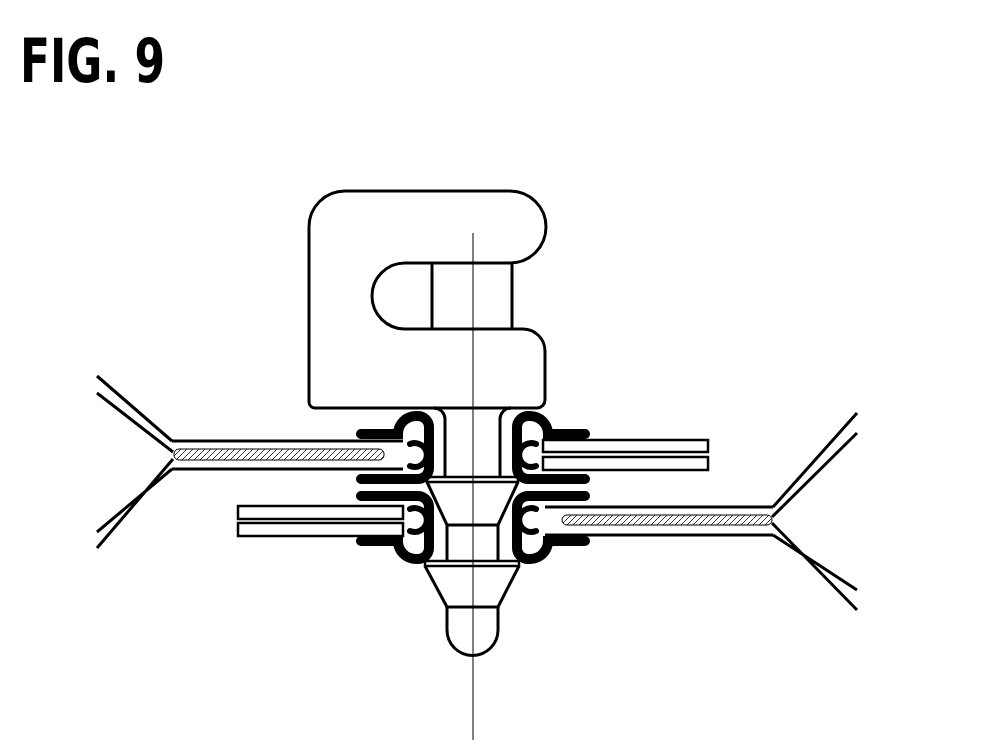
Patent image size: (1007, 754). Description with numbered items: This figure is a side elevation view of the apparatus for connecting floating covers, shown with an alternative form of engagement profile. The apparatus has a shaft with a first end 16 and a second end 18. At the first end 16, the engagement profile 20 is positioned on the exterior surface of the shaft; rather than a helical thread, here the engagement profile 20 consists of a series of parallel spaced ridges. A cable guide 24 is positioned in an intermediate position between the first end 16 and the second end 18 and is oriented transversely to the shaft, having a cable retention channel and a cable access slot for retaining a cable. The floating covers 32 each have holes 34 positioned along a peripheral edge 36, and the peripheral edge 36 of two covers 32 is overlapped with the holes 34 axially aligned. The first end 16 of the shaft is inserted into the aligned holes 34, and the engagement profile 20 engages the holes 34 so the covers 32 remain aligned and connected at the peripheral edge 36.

The first end 16 is at (482, 632).
The second end 18 is at (517, 296).
The engagement profile 20 is at (500, 585).
The cable guide 24 is at (322, 245).
The floating covers 32 is at (108, 430).
The holes 34 is at (578, 426).
The peripheral edge 36 is at (282, 440).